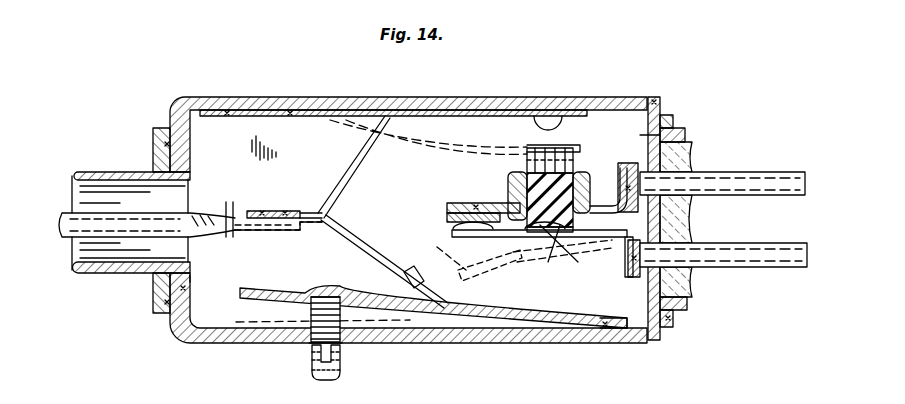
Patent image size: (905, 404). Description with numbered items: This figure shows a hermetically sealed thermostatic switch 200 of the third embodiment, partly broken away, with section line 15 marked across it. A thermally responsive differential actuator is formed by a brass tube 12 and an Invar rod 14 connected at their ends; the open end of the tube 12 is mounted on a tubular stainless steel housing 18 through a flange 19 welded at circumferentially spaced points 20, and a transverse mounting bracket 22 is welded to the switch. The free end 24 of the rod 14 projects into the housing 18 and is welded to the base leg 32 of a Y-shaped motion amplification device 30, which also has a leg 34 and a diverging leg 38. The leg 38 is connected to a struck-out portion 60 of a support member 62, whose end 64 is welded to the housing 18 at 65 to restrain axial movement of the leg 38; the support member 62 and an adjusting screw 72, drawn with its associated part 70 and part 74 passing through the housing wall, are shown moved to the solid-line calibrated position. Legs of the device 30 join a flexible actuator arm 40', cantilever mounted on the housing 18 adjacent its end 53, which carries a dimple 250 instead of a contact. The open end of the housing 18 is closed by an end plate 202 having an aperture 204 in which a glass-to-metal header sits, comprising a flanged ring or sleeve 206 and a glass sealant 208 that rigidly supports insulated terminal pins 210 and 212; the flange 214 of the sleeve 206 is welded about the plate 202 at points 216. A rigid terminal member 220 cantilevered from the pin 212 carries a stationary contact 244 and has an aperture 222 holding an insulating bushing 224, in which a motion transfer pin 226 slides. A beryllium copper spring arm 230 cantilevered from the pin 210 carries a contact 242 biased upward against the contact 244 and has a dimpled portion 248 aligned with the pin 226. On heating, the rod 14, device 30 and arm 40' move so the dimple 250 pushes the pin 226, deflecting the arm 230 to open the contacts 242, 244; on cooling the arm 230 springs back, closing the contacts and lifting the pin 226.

The tube 12 is at (125, 172).
The rod 14 is at (64, 213).
The section line 15- 15 is at (582, 52).
The switch housing 18 is at (220, 341).
The flange 19 is at (192, 281).
The welding points 20 is at (186, 289).
The mounting bracket 22 is at (157, 303).
The free end of rod 24 is at (225, 210).
The motion amplification device 30 is at (341, 174).
The base leg 32 is at (272, 211).
The leg 34 is at (376, 140).
The leg 38 is at (361, 244).
The actuator arm 40' is at (428, 137).
The end of actuator member 53 is at (243, 118).
The struck-out portion 60 is at (404, 280).
The support member 62 is at (248, 302).
The end of support member 64 is at (618, 318).
The welding 65 is at (605, 321).
The screw 70 is at (322, 291).
The adjusting screw 72 is at (343, 346).
The washer 74 is at (311, 345).
The thermostatic switch 200 is at (655, 76).
The end plate 202 is at (661, 103).
The aperture 204 is at (650, 136).
The flanged ring or sleeve 206 is at (686, 135).
The glass sealant 208 is at (688, 229).
The pin member terminal 210 is at (776, 243).
The pin member terminal 212 is at (774, 172).
The flange 214 is at (670, 326).
The welding points 216 is at (668, 122).
The rigid terminal member 220 is at (448, 208).
The aperture 222 is at (512, 192).
The bushing 224 is at (580, 180).
The motion transfer pin 226 is at (527, 166).
The spring arm 230 is at (511, 238).
The electrical contact 242 is at (450, 231).
The stationary electrical contact 244 is at (448, 217).
The dimpled portion 248 is at (560, 250).
The dimple 250 is at (541, 121).